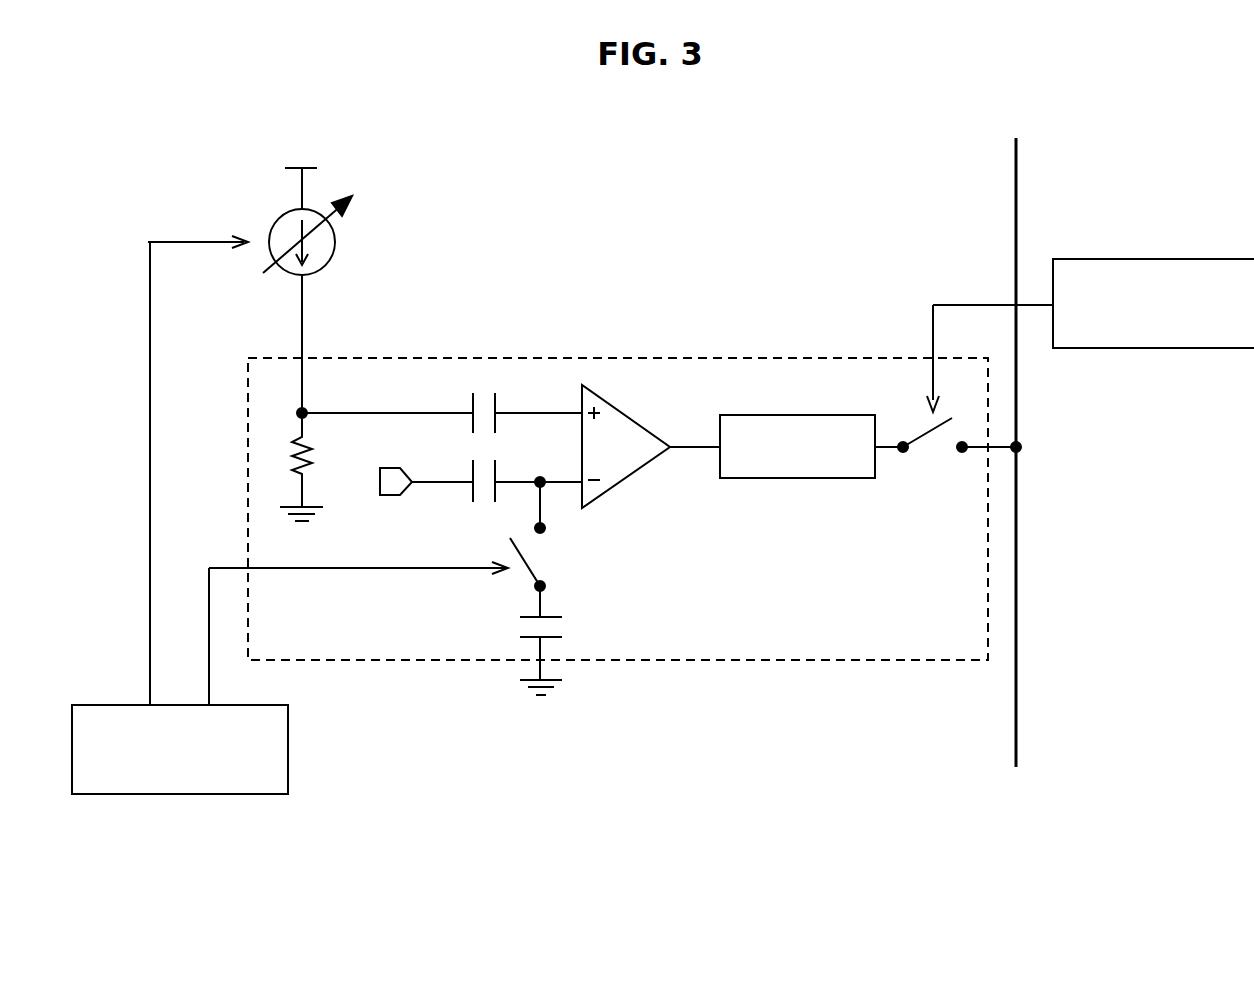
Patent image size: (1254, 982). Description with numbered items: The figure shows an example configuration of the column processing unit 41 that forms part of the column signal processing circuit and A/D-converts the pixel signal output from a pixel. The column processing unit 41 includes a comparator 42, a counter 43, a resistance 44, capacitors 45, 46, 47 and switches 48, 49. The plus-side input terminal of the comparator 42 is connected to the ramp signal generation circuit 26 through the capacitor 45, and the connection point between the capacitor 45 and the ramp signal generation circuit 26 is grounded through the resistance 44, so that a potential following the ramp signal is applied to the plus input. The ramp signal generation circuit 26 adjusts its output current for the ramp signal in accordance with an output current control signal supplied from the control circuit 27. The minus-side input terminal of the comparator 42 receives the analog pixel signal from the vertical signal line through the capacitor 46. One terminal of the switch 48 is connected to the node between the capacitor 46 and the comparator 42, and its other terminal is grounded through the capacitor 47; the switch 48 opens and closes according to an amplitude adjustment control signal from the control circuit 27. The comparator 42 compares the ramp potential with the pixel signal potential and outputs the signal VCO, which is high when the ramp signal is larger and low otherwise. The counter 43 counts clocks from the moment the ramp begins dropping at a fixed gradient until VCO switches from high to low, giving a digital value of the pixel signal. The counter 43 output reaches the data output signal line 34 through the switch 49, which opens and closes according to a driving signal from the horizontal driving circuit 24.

The horizontal driving circuit 24 is at (1163, 259).
The ramp signal generation circuit 26 is at (336, 243).
The control circuit 27 is at (179, 794).
The data output signal line 34 is at (1015, 172).
The column processing unit 41 is at (652, 660).
The comparator 42 is at (628, 480).
The counter 43 is at (797, 478).
The resistance 44 is at (311, 448).
The capacitor 45 is at (497, 405).
The capacitor 46 is at (497, 472).
The capacitor 47 is at (562, 615).
The switch 48 is at (528, 558).
The switch 49 is at (931, 430).